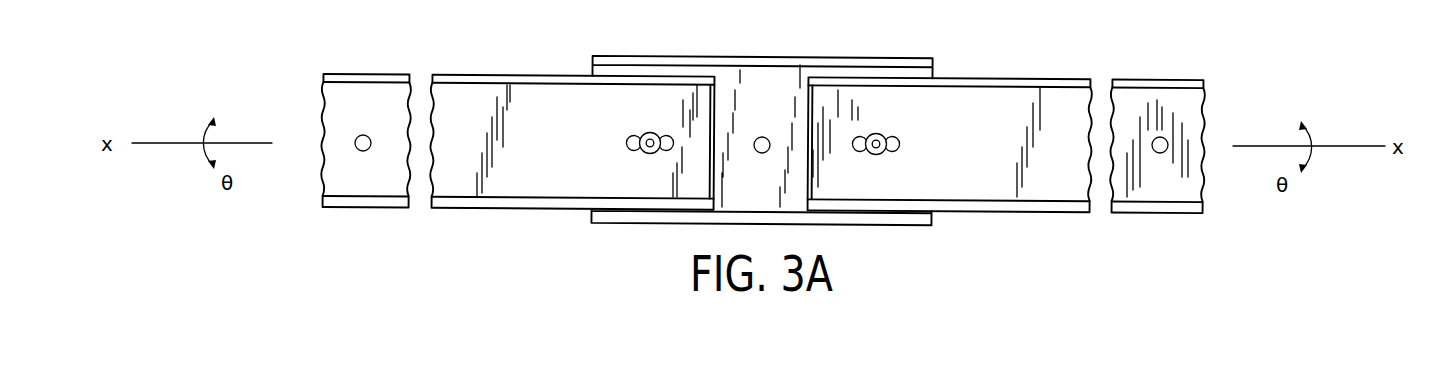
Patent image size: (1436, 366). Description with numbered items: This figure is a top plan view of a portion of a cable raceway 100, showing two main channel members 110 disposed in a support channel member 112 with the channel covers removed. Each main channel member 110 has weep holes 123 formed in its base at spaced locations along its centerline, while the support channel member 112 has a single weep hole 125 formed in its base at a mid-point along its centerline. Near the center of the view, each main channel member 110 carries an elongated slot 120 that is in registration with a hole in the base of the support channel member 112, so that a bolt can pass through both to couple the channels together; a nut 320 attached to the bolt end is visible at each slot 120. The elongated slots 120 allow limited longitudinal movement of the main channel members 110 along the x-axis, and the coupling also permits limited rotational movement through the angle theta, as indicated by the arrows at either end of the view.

The mounting assembly 100 is at (279, 94).
The main channel member 110 is at (461, 76).
The support channel member 112 is at (645, 229).
The slot 120 is at (638, 136).
The nut 320 is at (643, 151).
The weep hole 123 is at (354, 148).
The weep hole 125 is at (760, 153).